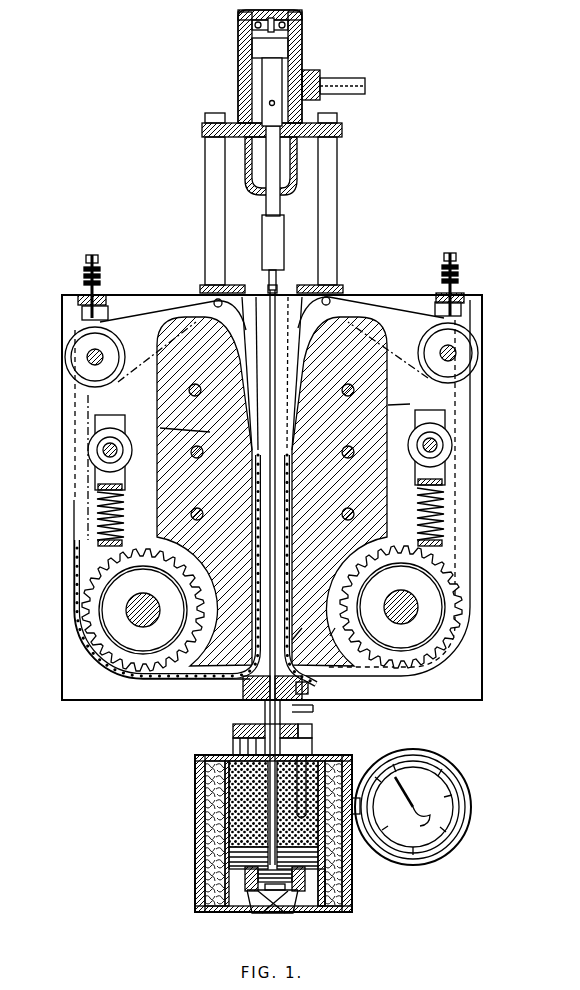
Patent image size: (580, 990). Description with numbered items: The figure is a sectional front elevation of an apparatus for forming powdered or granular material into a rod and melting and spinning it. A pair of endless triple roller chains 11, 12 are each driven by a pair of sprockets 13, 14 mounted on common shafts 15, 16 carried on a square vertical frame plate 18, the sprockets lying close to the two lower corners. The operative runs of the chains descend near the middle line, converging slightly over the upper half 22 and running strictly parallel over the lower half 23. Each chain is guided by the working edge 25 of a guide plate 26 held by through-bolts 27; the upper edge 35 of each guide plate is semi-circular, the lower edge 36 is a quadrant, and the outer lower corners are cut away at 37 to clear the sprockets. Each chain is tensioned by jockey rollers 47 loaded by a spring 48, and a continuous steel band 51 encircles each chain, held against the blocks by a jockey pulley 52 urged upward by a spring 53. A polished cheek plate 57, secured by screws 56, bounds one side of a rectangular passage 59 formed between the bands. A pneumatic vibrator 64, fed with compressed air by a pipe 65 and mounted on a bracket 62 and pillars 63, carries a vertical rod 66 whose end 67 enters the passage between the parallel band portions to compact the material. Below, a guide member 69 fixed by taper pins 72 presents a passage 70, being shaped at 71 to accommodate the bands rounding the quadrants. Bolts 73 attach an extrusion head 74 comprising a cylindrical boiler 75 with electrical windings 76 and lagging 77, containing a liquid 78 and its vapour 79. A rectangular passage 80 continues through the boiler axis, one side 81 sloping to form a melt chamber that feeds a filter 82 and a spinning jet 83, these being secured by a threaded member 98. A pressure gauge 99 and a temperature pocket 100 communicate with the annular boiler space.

The endless triple roller chain 11 is at (73, 540).
The endless triple roller chain 12 is at (462, 436).
The sprocket 13 is at (80, 632).
The sprocket 14 is at (462, 620).
The shaft 15 is at (128, 610).
The shaft 16 is at (418, 607).
The frame plate 18 is at (474, 540).
The upper half of the operative runs 22 is at (272, 373).
The lower half of the operative runs 23 is at (235, 688).
The working edge 25 is at (302, 628).
The guide plate 26 is at (160, 428).
The through-bolt 27 is at (189, 391).
The upper edge 35 is at (205, 320).
The lower edge 36 is at (222, 688).
The cut-away corner 37 is at (335, 628).
The jockey roller 47 is at (442, 450).
The spring 48 is at (446, 505).
The continuous steel band 51 is at (150, 318).
The jockey pulley 52 is at (70, 345).
The spring 53 is at (82, 275).
The screw 56 is at (277, 322).
The cheek plate 57 is at (262, 290).
The passage 59 is at (252, 692).
The bracket 62 is at (330, 290).
The pillar 63 is at (337, 205).
The pneumatic vibrator 64 is at (238, 88).
The pipe 65 is at (342, 92).
The vertical rod 66 is at (276, 305).
The rod end 67 is at (300, 550).
The guide member 69 is at (312, 748).
The passage 70 is at (314, 731).
The shaped portion 71 is at (315, 708).
The taper pin 72 is at (240, 720).
The bolt 73 is at (233, 750).
The extrusion head 74 is at (235, 782).
The cylindrical boiler 75 is at (230, 808).
The electrical windings 76 is at (235, 865).
The lagging 77 is at (210, 830).
The liquid 78 is at (215, 883).
The vapour 79 is at (205, 770).
The passage 80 is at (350, 757).
The sloping side 81 is at (292, 850).
The filter 82 is at (325, 892).
The spinning jet 83 is at (288, 910).
The threaded member 98 is at (250, 908).
The pressure gauge 99 is at (440, 840).
The temperature pocket 100 is at (416, 750).